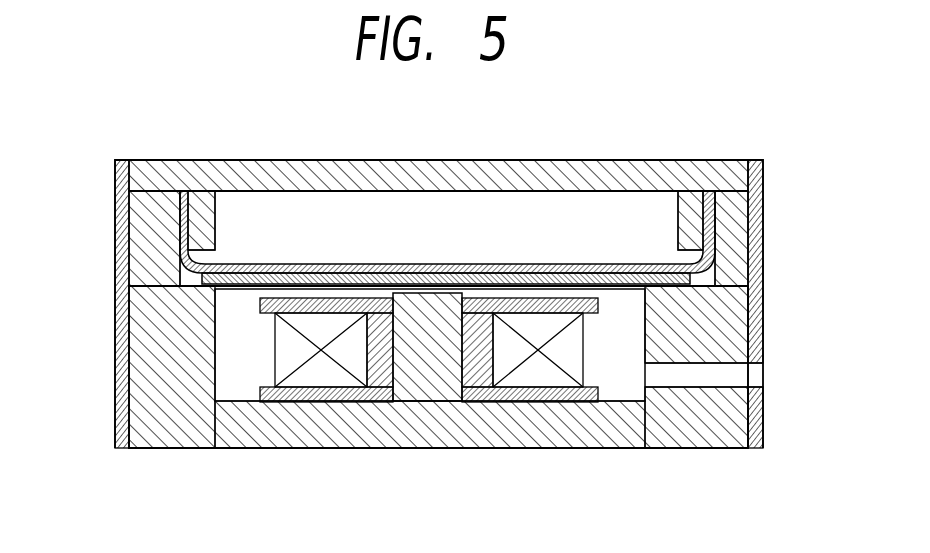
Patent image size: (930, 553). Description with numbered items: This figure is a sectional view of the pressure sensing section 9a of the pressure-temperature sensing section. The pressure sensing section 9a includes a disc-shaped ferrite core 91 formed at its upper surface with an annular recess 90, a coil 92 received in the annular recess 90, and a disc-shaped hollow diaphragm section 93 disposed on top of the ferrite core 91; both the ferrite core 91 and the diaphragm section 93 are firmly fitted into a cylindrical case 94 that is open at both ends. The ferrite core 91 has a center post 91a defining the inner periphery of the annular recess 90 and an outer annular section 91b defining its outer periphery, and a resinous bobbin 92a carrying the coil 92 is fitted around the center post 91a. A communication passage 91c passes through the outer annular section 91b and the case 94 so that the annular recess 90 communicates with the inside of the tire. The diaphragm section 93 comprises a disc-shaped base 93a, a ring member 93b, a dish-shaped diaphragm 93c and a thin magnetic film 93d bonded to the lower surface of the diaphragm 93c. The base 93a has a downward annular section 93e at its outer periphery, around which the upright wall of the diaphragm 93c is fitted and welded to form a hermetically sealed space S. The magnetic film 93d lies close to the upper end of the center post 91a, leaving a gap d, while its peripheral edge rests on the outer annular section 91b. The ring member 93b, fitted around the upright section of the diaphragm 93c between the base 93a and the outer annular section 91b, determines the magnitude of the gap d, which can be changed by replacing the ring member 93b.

The pressure sensing section 9a is at (116, 363).
The annular recess 90 is at (233, 380).
The ferrite core 91 is at (267, 430).
The center post 91a is at (417, 347).
The outer annular section 91b is at (160, 358).
The communication passage 91c is at (735, 379).
The coil 92 is at (555, 377).
The resinous bobbin 92a is at (372, 403).
The diaphragm section 93 is at (403, 156).
The base 93a is at (553, 175).
The ring member 93b is at (147, 227).
The diaphragm 93c is at (357, 263).
The magnetic film 93d is at (455, 273).
The annular section 93e is at (687, 222).
The cylindrical case 94 is at (765, 317).
The hermetically sealed space S is at (617, 218).
The gap d is at (430, 287).